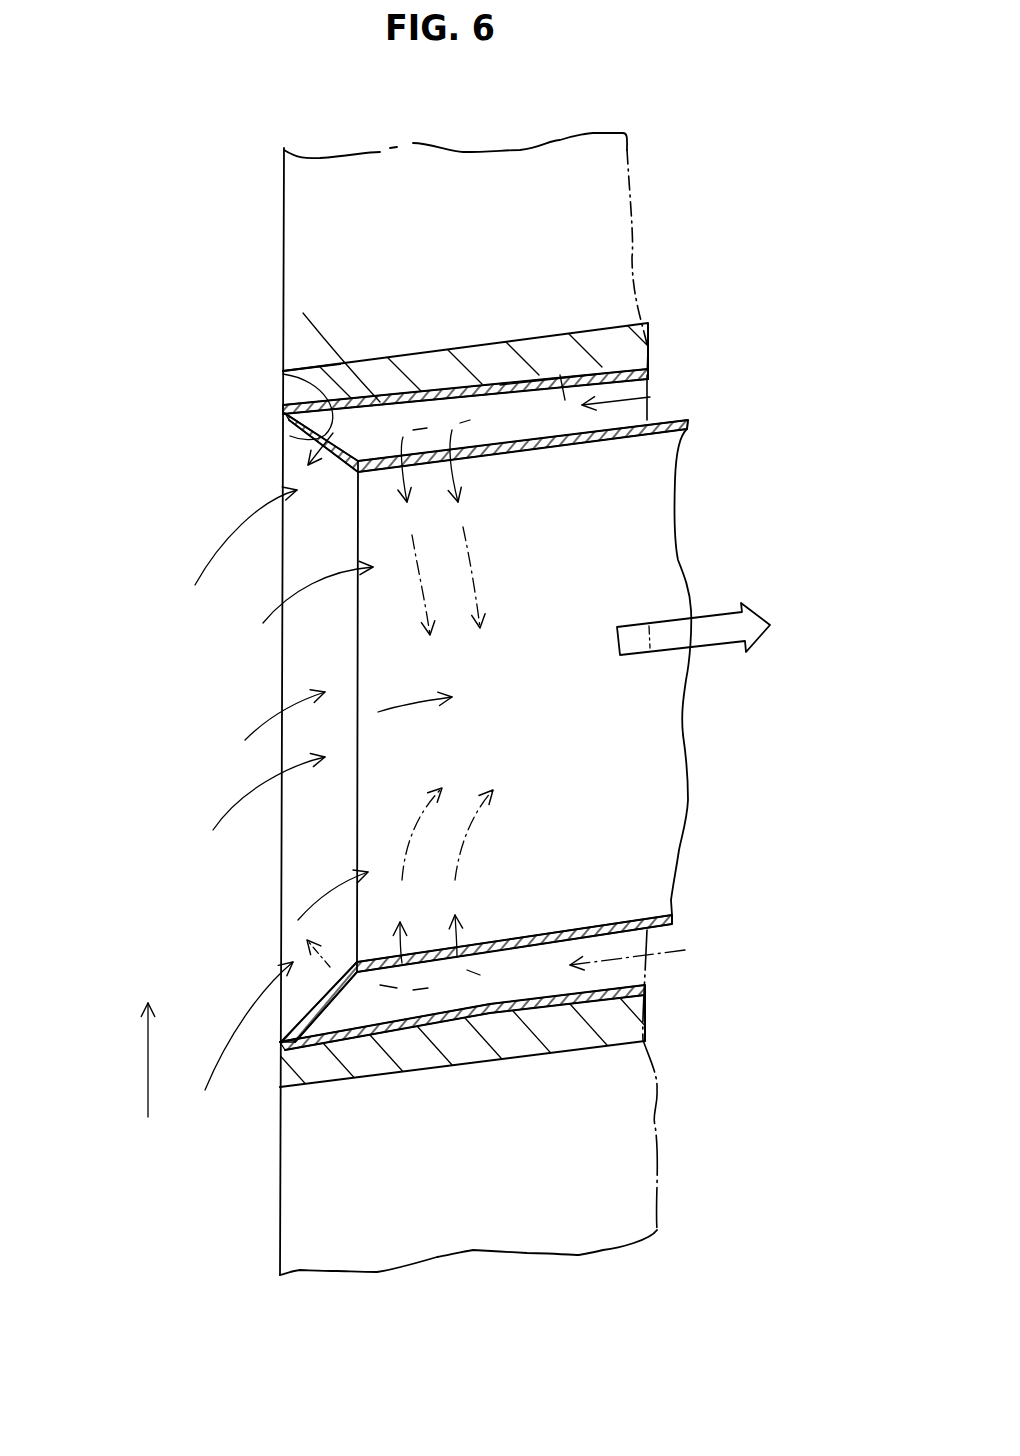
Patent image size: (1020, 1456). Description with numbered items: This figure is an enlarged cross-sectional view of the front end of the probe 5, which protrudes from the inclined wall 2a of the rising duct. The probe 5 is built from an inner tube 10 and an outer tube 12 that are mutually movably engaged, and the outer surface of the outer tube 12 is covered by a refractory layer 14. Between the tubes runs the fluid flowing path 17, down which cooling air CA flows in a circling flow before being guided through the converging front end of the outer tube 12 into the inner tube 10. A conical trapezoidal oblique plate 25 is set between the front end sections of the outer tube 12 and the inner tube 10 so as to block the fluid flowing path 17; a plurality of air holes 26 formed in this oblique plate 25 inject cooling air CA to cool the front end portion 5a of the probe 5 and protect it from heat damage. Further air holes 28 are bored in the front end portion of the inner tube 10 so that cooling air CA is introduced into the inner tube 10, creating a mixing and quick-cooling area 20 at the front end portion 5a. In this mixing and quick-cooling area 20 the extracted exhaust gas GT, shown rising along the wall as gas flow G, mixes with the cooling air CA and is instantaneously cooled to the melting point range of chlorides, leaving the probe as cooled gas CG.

The inclined wall 2a is at (283, 212).
The inner tube 10 is at (677, 423).
The front end portion 5a is at (293, 390).
The probe 5 is at (685, 915).
The outer tube 12 is at (640, 370).
The refractory layer 14 is at (563, 400).
The fluid flowing path 17 is at (605, 331).
The mixing and quick-cooling area 20 is at (397, 642).
The conical trapezoidal oblique plate 25 is at (282, 372).
The air holes 26 is at (290, 436).
The air holes 28 is at (424, 458).
The cooling air CA is at (303, 313).
The extracted exhaust gas GT is at (235, 530).
The gas flow G is at (148, 1063).
The cooled gas CG is at (723, 647).